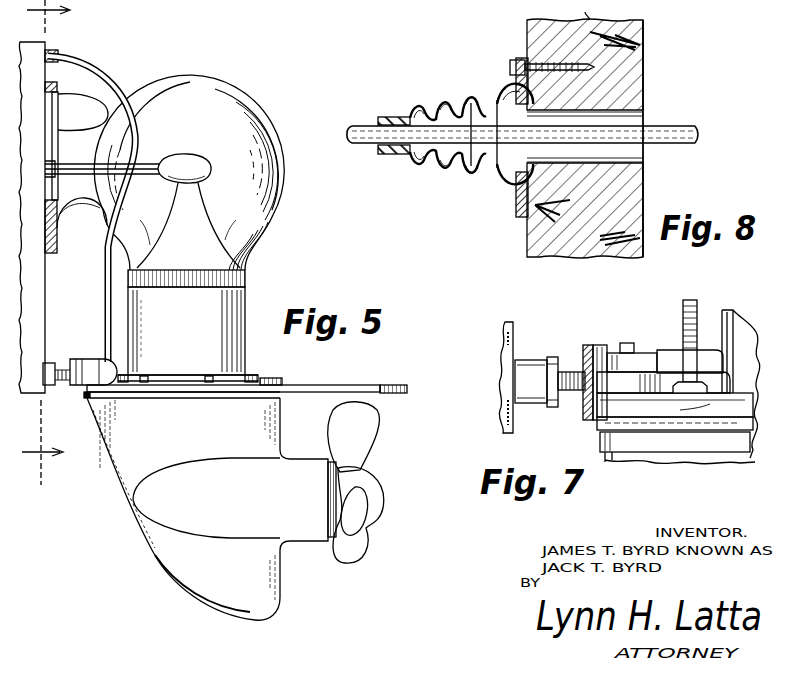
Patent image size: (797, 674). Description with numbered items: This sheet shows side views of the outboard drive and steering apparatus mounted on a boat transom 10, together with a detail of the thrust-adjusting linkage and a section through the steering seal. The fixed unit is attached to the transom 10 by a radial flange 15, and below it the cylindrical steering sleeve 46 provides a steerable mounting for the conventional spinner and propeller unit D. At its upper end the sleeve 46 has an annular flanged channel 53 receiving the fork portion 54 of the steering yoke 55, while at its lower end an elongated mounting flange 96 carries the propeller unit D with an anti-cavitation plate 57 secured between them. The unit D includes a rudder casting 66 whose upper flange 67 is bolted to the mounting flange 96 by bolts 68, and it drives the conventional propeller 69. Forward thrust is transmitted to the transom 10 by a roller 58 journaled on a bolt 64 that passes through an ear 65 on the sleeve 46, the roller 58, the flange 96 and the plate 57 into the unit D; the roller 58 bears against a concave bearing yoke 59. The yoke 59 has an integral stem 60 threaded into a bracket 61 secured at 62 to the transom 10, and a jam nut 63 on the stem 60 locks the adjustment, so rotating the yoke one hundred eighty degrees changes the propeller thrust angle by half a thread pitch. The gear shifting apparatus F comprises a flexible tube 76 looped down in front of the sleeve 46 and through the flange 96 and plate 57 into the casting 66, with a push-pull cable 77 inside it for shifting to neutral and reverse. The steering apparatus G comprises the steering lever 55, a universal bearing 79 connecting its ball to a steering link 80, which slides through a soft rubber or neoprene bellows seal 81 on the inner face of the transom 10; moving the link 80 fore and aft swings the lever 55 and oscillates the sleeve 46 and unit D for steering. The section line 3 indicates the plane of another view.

In FIG. 5, the section line 3- 3 is at (57, 244).
In FIG. 5, the gear shifting apparatus F is at (116, 57).
In FIG. 5, the steering apparatus G is at (215, 155).
In FIG. 5, the spinner and propeller unit D is at (135, 555).
In FIG. 7, the spinner and propeller unit D is at (646, 474).
In FIG. 5, the boat transom 10 is at (38, 300).
In FIG. 7, the boat transom 10 is at (490, 344).
In FIG. 5, the radial flange 15 is at (58, 96).
In FIG. 5, the cylindrical steering sleeve 46 is at (244, 318).
In FIG. 7, the cylindrical steering sleeve 46 is at (736, 318).
In FIG. 8, the annular flanged channel 53 is at (491, 129).
In FIG. 5, the fork portion 54 is at (246, 280).
In FIG. 5, the steering yoke 55 is at (188, 213).
In FIG. 5, the anti-cavitation plate 57 is at (368, 386).
In FIG. 7, the anti-cavitation plate 57 is at (752, 425).
In FIG. 7, the roller 58 is at (604, 352).
In FIG. 5, the bearing yoke 59 is at (80, 366).
In FIG. 7, the bearing yoke 59 is at (588, 345).
In FIG. 7, the stem 60 is at (572, 372).
In FIG. 7, the bracket 61 is at (522, 358).
In FIG. 7, the securing point 62 is at (512, 430).
In FIG. 7, the jam nut 63 is at (556, 357).
In FIG. 7, the bolt 64 is at (634, 343).
In FIG. 7, the ear 65 is at (668, 360).
In FIG. 5, the rudder casting 66 is at (182, 590).
In FIG. 5, the flange 67 is at (82, 398).
In FIG. 7, the flange 67 is at (745, 445).
In FIG. 5, the bolts 68 is at (235, 380).
In FIG. 5, the propeller 69 is at (378, 426).
In FIG. 5, the flexible tube 76 is at (116, 78).
In FIG. 5, the push-pull cable 77 is at (133, 122).
In FIG. 7, the push-pull cable 77 is at (698, 318).
In FIG. 5, the universal bearing 79 is at (182, 160).
In FIG. 5, the steering link 80 is at (82, 155).
In FIG. 8, the steering link 80 is at (362, 126).
In FIG. 8, the bellows seal 81 is at (462, 100).
In FIG. 5, the mounting flange 96 is at (270, 384).
In FIG. 7, the mounting flange 96 is at (637, 400).